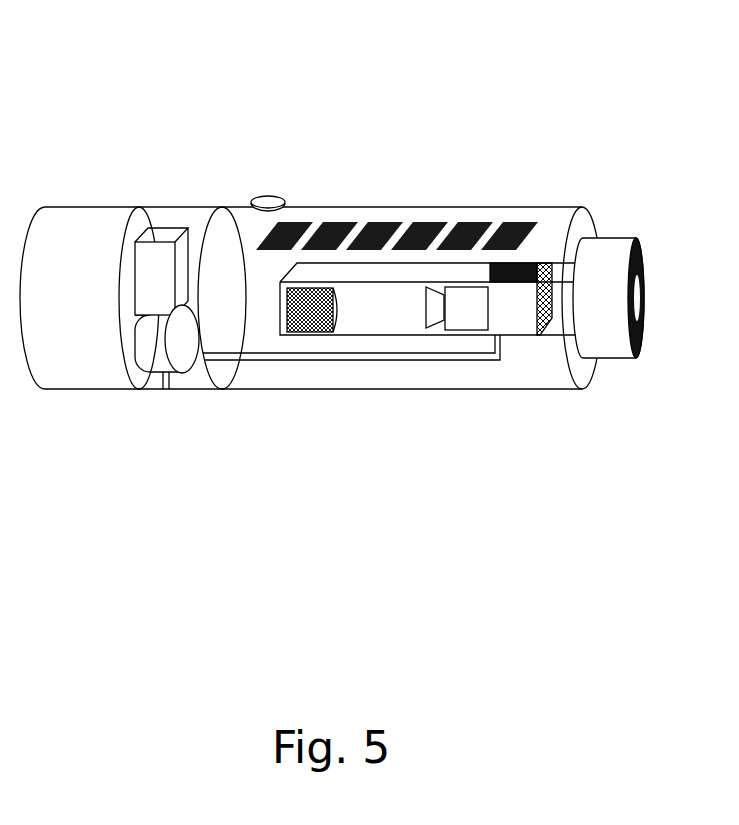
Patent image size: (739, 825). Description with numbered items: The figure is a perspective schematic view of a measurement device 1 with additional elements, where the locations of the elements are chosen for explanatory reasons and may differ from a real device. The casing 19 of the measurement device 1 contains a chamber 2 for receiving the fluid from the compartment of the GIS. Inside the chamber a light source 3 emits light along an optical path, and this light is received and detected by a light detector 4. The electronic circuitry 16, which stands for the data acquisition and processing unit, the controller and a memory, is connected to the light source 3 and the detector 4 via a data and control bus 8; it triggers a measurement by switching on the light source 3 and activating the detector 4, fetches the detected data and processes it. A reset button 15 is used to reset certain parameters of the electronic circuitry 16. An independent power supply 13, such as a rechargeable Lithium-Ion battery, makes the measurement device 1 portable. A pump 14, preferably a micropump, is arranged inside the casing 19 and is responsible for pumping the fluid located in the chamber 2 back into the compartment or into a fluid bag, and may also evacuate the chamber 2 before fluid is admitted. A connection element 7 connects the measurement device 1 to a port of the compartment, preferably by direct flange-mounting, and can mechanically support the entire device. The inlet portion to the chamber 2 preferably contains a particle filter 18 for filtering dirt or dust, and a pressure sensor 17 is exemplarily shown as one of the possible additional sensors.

The measurement device 1 is at (172, 13).
The chamber 2 is at (401, 332).
The light source 3 is at (302, 337).
The light detector 4 is at (468, 323).
The connection element 7 is at (612, 347).
The data and control bus 8 is at (422, 361).
The independent power supply 13 is at (94, 372).
The pump 14 is at (166, 222).
The reset button 15 is at (272, 196).
The data acquisition and processing unit 16 is at (385, 220).
The pressure sensor 17 is at (538, 262).
The particle filter 18 is at (539, 336).
The casing 19 is at (253, 390).